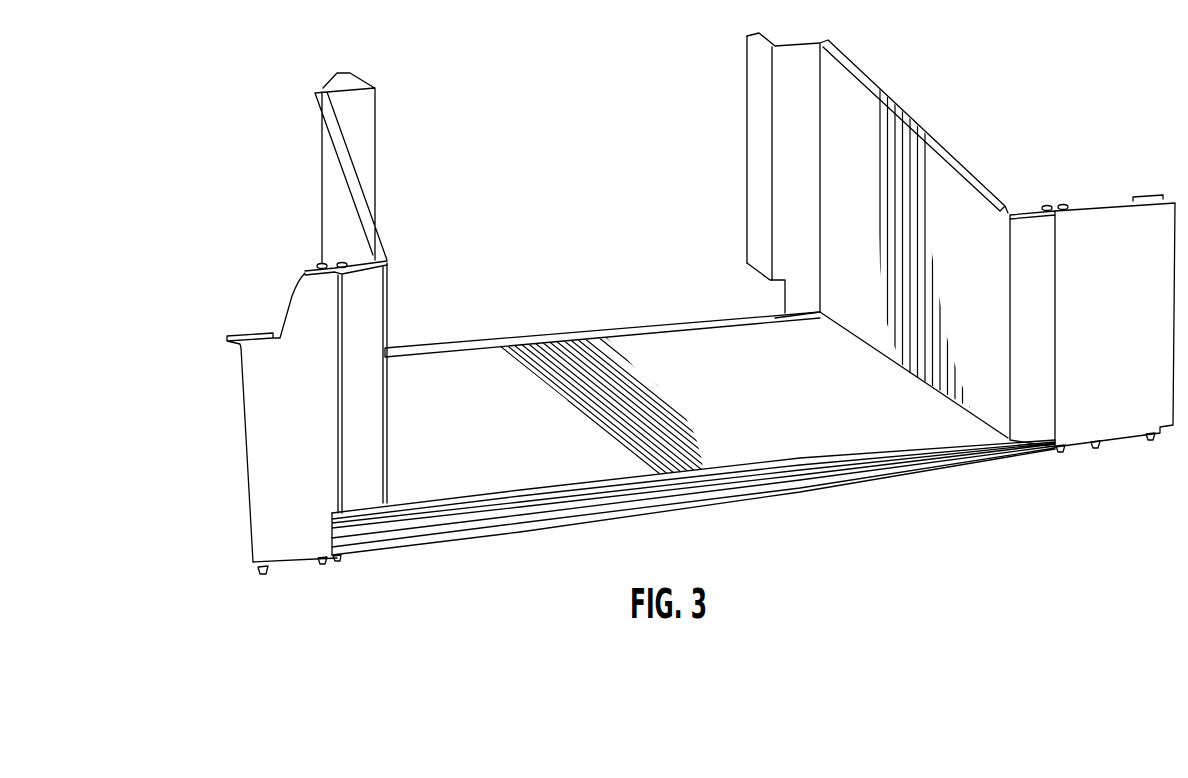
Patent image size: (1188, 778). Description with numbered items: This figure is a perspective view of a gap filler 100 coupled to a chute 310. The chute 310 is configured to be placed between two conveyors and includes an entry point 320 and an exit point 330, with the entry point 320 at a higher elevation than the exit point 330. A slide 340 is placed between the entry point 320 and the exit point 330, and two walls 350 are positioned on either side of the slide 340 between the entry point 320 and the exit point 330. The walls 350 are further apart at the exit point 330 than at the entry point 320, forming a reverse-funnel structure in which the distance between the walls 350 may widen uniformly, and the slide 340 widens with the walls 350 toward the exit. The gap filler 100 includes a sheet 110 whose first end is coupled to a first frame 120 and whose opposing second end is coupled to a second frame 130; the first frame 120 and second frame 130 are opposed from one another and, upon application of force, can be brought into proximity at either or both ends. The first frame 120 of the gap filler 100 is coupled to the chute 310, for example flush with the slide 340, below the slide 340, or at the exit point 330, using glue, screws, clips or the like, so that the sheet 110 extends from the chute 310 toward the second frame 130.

The gap filler 100 is at (348, 533).
The sheet 110 is at (420, 513).
The first frame 120 is at (388, 503).
The second frame 130 is at (380, 553).
The chute 310 is at (295, 373).
The entry point 320 is at (566, 333).
The exit point 330 is at (840, 452).
The slide 340 is at (710, 358).
The walls 350 is at (830, 196).